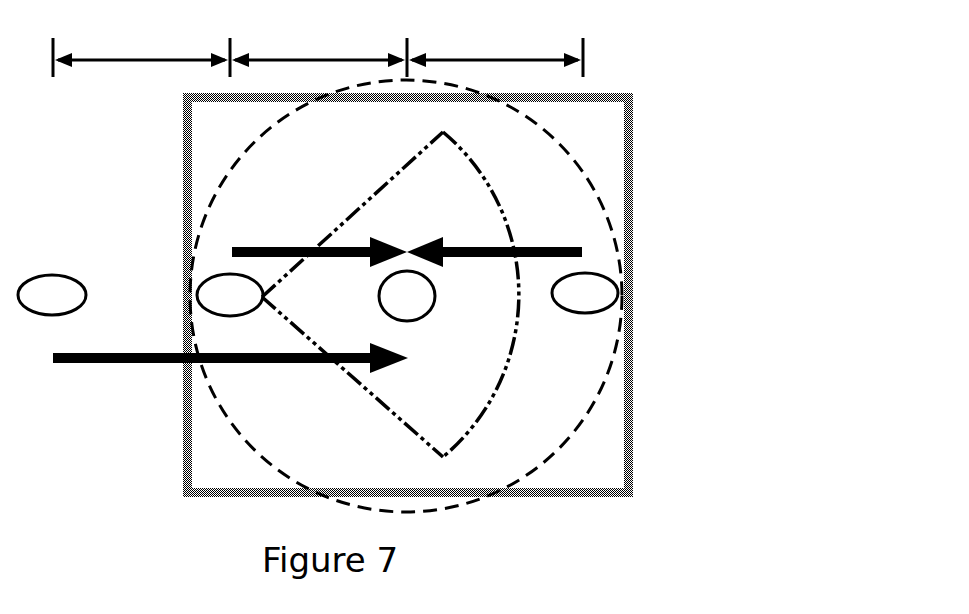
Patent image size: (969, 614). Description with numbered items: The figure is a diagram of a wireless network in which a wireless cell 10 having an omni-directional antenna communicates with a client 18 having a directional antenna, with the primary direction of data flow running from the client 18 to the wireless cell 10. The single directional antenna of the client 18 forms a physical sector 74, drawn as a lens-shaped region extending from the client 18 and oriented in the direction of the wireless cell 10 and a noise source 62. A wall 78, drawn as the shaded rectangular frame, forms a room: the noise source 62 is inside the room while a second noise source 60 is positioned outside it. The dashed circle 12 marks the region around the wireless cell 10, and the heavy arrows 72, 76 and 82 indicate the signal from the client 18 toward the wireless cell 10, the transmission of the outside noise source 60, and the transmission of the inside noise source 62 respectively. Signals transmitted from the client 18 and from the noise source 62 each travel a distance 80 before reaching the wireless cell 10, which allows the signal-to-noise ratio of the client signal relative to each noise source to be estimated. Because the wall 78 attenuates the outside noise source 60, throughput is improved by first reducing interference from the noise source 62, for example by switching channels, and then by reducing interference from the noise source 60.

The wireless cell 10 is at (392, 308).
The coverage circle 12 is at (559, 141).
The client 18 is at (215, 307).
The noise source 60 is at (37, 307).
The noise source 62 is at (570, 305).
The signal arrow 72 is at (249, 246).
The physical sector 74 is at (471, 170).
The long signal arrow 76 is at (80, 363).
The wall 78 is at (634, 490).
The distance 80 is at (156, 57).
The opposing signal arrow 82 is at (565, 246).